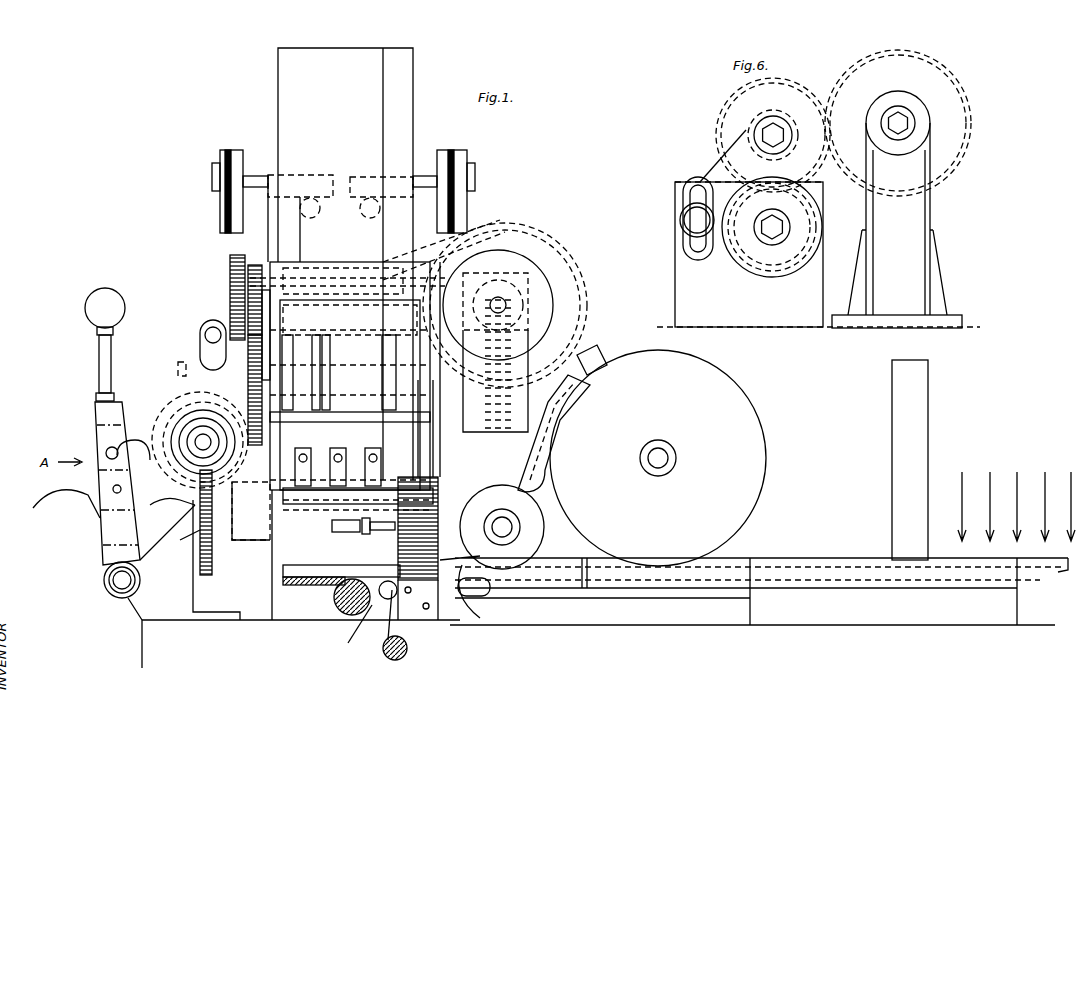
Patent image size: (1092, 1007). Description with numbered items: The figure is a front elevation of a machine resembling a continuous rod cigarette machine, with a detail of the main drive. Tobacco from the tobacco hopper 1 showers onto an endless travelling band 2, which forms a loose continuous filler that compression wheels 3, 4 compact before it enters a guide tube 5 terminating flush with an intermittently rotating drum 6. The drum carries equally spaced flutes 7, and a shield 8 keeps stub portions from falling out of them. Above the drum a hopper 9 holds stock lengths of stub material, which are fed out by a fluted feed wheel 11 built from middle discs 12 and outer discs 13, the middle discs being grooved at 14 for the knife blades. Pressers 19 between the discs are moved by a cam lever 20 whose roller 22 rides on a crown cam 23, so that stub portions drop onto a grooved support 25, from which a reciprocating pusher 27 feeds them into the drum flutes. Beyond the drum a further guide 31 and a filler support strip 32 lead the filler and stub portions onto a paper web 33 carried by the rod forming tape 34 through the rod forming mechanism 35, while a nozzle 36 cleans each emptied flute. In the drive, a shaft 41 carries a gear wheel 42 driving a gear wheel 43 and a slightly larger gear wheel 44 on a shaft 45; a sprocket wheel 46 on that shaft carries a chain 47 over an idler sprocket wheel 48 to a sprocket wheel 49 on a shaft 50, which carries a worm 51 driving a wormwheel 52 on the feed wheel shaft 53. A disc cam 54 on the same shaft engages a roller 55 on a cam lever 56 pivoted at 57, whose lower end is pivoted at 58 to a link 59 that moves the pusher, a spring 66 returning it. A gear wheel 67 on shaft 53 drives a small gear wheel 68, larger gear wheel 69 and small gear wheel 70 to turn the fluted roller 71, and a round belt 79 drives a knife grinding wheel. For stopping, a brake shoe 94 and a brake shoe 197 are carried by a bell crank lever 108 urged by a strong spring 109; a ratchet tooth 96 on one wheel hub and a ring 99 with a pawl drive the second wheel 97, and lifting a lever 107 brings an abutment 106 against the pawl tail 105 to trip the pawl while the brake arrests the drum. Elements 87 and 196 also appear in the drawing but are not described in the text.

In FIG. 1, the tobacco hopper 1 is at (947, 426).
In FIG. 1, the endless travelling band 2 is at (468, 615).
In FIG. 1, the compression wheel 3 is at (766, 486).
In FIG. 1, the compression wheel 4 is at (540, 533).
In FIG. 1, the guide tube 5 is at (440, 520).
In FIG. 1, the intermittently rotating drum 6 is at (438, 478).
In FIG. 1, the flutes 7 is at (405, 530).
In FIG. 1, the shield 8 is at (228, 162).
In FIG. 1, the hopper 9 is at (413, 95).
In FIG. 1, the fluted feed wheel 11 is at (355, 345).
In FIG. 1, the middle discs 12 is at (328, 372).
In FIG. 1, the outer discs 13 is at (339, 372).
In FIG. 1, the peripheral groove 14 is at (337, 459).
In FIG. 1, the pressers 19 is at (375, 459).
In FIG. 1, the cam lever 20 is at (487, 310).
In FIG. 1, the roller 22 is at (488, 305).
In FIG. 1, the crown cam 23 is at (520, 285).
In FIG. 1, the grooved support 25 is at (335, 527).
In FIG. 1, the reciprocating pusher 27 is at (300, 505).
In FIG. 1, the further guide 31 is at (334, 596).
In FIG. 1, the filler support strip 32 is at (418, 620).
In FIG. 1, the paper web 33 is at (386, 632).
In FIG. 1, the rod forming tape 34 is at (348, 634).
In FIG. 1, the rod forming mechanism 35 is at (296, 565).
In FIG. 1, the nozzle 36 is at (350, 535).
In FIG. 6, the shaft 41 is at (765, 232).
In FIG. 6, the gear wheel 42 is at (773, 275).
In FIG. 6, the gear wheel 43 is at (800, 100).
In FIG. 1, the gear wheel 44 is at (175, 395).
In FIG. 6, the gear wheel 44 is at (962, 85).
In FIG. 1, the shaft 45 is at (185, 425).
In FIG. 6, the shaft 45 is at (908, 122).
In FIG. 1, the sprocket wheel 46 is at (300, 457).
In FIG. 1, the chain 47 is at (182, 360).
In FIG. 1, the idler sprocket wheel 48 is at (205, 325).
In FIG. 1, the sprocket wheel 49 is at (530, 235).
In FIG. 1, the shaft 50 is at (498, 297).
In FIG. 1, the worm 51 is at (575, 250).
In FIG. 1, the wormwheel 52 is at (522, 525).
In FIG. 1, the shaft 53 is at (535, 345).
In FIG. 1, the disc cam 54 is at (585, 305).
In FIG. 1, the roller 55 is at (440, 262).
In FIG. 1, the cam lever 56 is at (442, 420).
In FIG. 1, the pivot 57 is at (440, 388).
In FIG. 1, the pivot 58 is at (442, 485).
In FIG. 1, the link 59 is at (368, 534).
In FIG. 1, the spring 66 is at (318, 500).
In FIG. 1, the gear wheel 67 is at (292, 342).
In FIG. 1, the small gear wheel 68 is at (262, 285).
In FIG. 1, the larger gear wheel 69 is at (235, 330).
In FIG. 1, the small gear wheel 70 is at (245, 262).
In FIG. 1, the fluted roller 71 is at (318, 262).
In FIG. 1, the round belt 79 is at (213, 150).
In FIG. 1, the rack 87 is at (212, 565).
In FIG. 1, the brake shoe 94 is at (245, 522).
In FIG. 1, the ratchet tooth 96 is at (183, 400).
In FIG. 1, the second wheel 97 is at (180, 508).
In FIG. 1, the ring 99 is at (140, 440).
In FIG. 1, the pawl tail 105 is at (255, 345).
In FIG. 1, the abutment 106 is at (112, 489).
In FIG. 1, the lever 107 is at (72, 505).
In FIG. 1, the bell crank lever 108 is at (98, 355).
In FIG. 1, the strong spring 109 is at (106, 450).
In FIG. 1, the link 196 is at (165, 470).
In FIG. 1, the brake shoe 197 is at (150, 420).